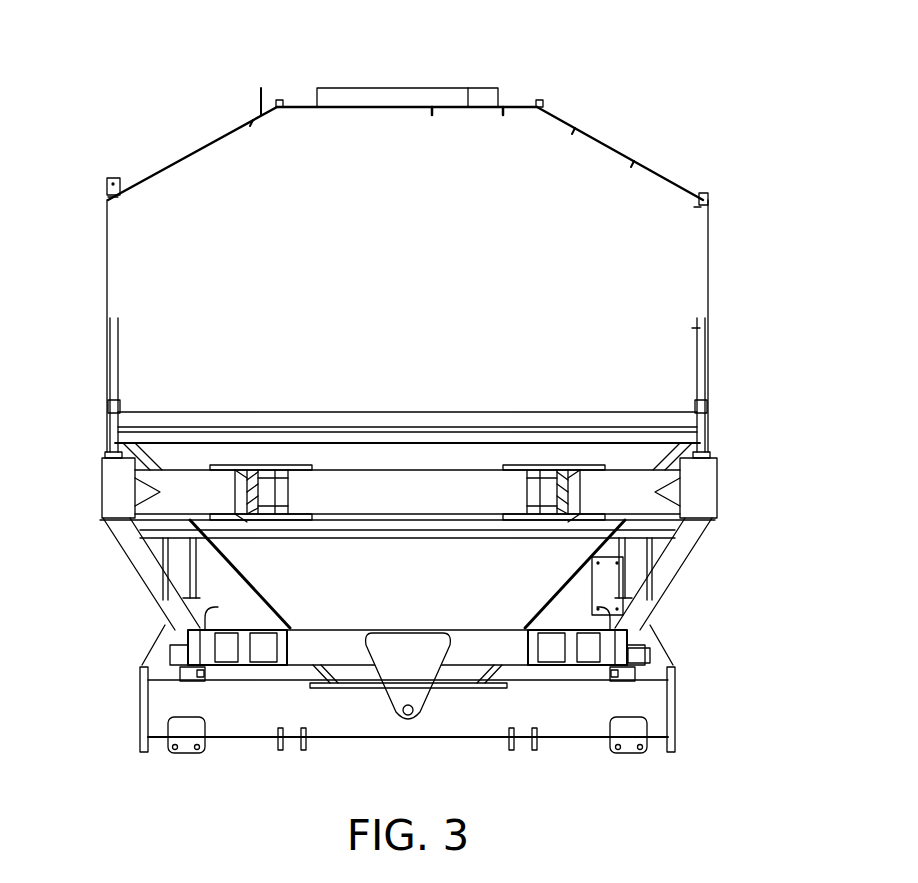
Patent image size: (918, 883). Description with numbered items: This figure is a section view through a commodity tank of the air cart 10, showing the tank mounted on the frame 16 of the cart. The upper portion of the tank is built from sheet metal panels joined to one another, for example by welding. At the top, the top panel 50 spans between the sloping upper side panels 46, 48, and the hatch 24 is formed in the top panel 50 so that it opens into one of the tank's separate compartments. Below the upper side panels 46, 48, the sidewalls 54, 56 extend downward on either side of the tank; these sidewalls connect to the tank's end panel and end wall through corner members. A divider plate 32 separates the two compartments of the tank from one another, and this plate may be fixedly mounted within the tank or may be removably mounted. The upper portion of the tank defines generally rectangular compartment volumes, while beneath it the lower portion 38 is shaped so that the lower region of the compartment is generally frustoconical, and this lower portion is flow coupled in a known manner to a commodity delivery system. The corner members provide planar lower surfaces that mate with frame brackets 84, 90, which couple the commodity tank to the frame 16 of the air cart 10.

The air cart 10 is at (653, 88).
The hatch 24 is at (432, 95).
The top panel 50 is at (512, 106).
The upper side panel 46 is at (192, 155).
The divider plate 32 is at (663, 181).
The upper side panel 48 is at (558, 122).
The sidewall 54 is at (107, 253).
The sidewall 56 is at (708, 266).
The frame bracket 84 is at (104, 461).
The frame bracket 90 is at (716, 461).
The lower portion 38 is at (278, 612).
The frame 16 is at (689, 586).